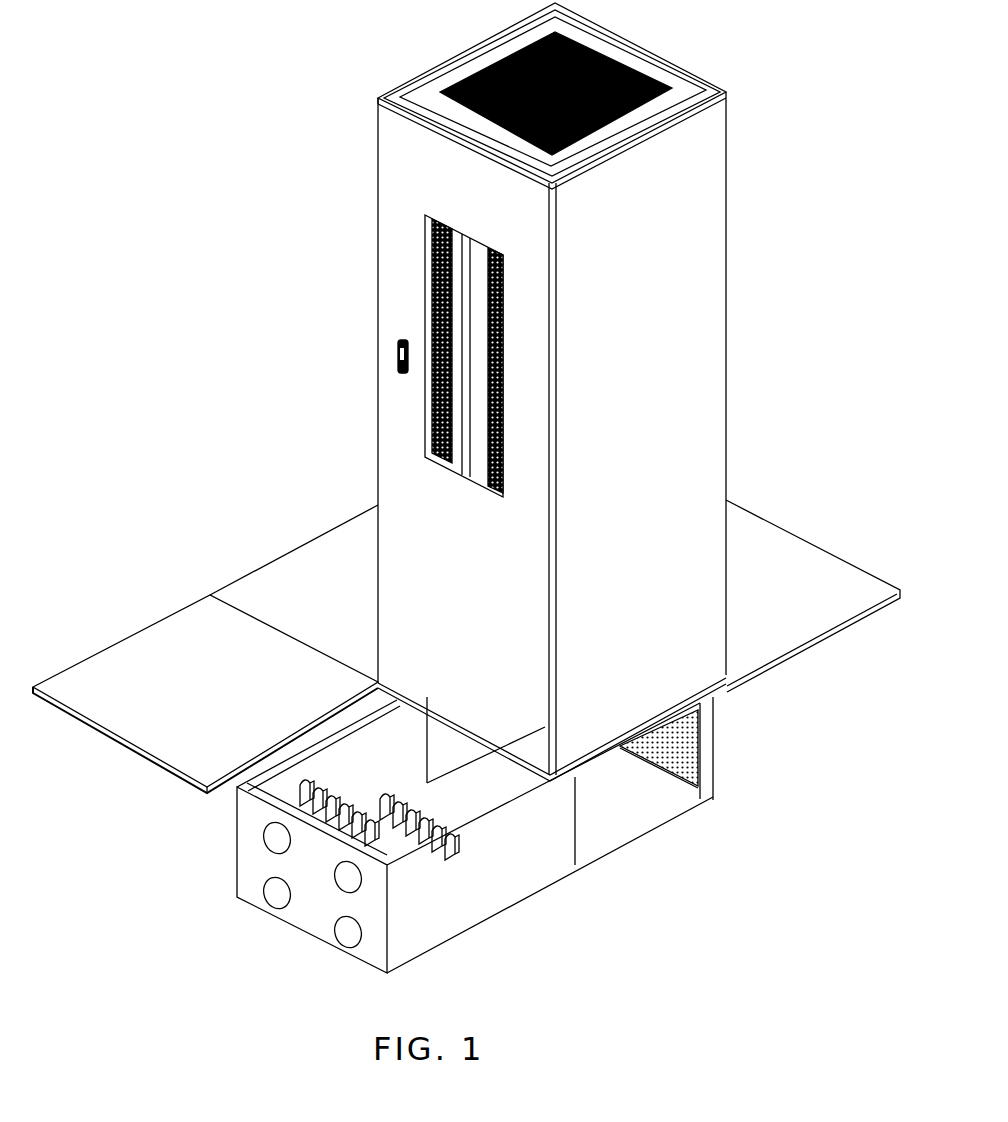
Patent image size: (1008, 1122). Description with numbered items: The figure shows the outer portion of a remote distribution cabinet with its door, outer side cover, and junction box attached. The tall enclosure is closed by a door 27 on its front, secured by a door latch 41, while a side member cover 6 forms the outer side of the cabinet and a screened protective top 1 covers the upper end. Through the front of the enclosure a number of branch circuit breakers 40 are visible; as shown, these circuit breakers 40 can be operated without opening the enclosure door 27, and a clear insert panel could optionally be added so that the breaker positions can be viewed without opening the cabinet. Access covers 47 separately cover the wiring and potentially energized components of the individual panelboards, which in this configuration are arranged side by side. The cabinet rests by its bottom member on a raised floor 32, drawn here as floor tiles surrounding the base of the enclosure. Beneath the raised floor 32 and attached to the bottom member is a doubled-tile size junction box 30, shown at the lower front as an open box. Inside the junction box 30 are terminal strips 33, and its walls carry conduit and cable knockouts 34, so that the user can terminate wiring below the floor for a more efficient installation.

The screened protective top 1 is at (679, 90).
The side member cover 6 is at (697, 390).
The door 27 is at (405, 467).
The branch circuit breakers 40 is at (428, 268).
The door latch 41 is at (398, 357).
The access covers 47 is at (462, 479).
The raised floor 32 is at (180, 630).
The doubled-tile size junction box 30 is at (527, 862).
The terminal strips 33 is at (345, 785).
The conduit and cable knockouts 34 is at (277, 840).